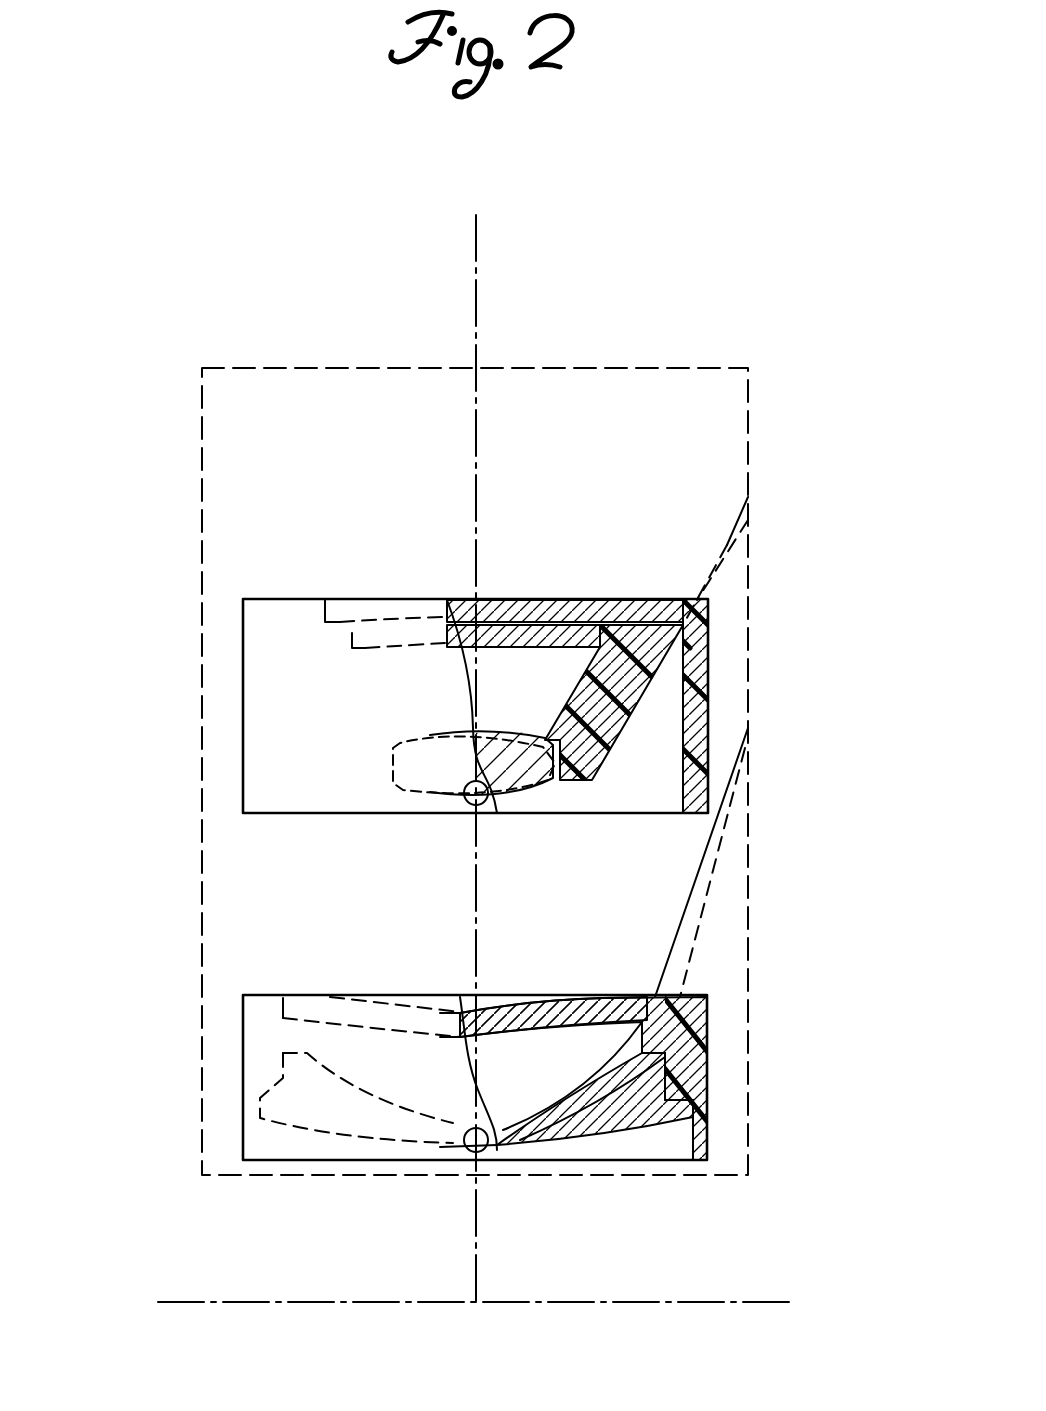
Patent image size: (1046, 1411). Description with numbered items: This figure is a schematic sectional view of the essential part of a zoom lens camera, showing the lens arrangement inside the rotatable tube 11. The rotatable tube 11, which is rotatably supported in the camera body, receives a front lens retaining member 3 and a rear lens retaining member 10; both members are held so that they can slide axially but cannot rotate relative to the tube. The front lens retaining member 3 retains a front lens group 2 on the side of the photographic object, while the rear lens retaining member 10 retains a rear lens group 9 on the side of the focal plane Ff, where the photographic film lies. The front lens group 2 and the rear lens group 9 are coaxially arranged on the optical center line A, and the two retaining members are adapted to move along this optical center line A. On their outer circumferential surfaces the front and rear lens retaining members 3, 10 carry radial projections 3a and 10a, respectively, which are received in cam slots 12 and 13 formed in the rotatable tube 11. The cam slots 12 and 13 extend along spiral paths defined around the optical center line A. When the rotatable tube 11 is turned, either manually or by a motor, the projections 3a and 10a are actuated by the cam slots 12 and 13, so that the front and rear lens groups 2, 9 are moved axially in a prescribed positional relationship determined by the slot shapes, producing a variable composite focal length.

The optical center line A is at (470, 315).
The front lens group 2 is at (532, 590).
The front lens retaining member 3 is at (243, 752).
The radial projection 3a is at (463, 800).
The rear lens group 9 is at (514, 988).
The rear lens retaining member 10 is at (243, 1100).
The radial projection 10a is at (463, 1147).
The rotatable tube 11 is at (202, 905).
The cam slot 12 is at (723, 557).
The cam slot 13 is at (690, 913).
The focal plane Ff is at (213, 1302).